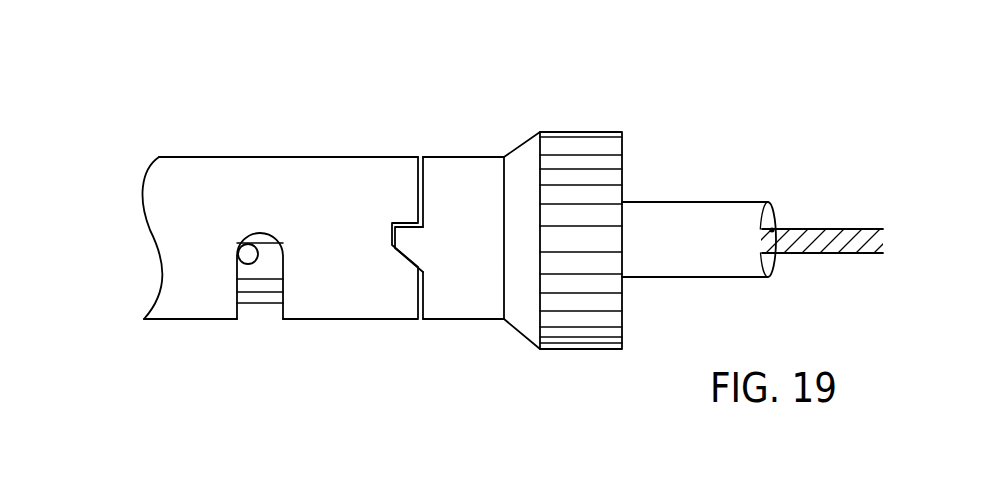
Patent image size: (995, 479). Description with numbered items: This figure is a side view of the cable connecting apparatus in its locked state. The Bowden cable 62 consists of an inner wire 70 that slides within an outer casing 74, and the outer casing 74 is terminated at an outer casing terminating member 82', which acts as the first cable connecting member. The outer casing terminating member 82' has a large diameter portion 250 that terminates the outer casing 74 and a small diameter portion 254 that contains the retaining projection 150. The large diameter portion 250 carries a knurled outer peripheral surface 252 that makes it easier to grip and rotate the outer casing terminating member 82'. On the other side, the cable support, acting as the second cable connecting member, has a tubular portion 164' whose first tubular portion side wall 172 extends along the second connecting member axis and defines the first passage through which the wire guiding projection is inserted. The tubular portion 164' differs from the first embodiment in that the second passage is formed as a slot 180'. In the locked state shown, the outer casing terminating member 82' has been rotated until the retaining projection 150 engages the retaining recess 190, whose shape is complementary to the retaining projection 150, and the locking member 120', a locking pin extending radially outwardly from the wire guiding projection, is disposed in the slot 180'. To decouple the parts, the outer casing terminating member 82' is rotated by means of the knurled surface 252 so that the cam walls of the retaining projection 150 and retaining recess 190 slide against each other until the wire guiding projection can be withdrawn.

The first tubular portion side wall 172 is at (219, 170).
The tubular portion 164' is at (281, 208).
The retaining recess 190 is at (392, 237).
The retaining projection 150 is at (412, 243).
The small diameter portion 254 is at (457, 300).
The outer casing terminating member 82' is at (501, 213).
The large diameter portion 250 is at (585, 132).
The knurled outer peripheral surface 252 is at (573, 340).
The outer casing 74 is at (664, 212).
The Bowden cable 62 is at (728, 185).
The inner wire 70 is at (838, 229).
The slot 180' is at (250, 305).
The locking member 120' is at (171, 252).